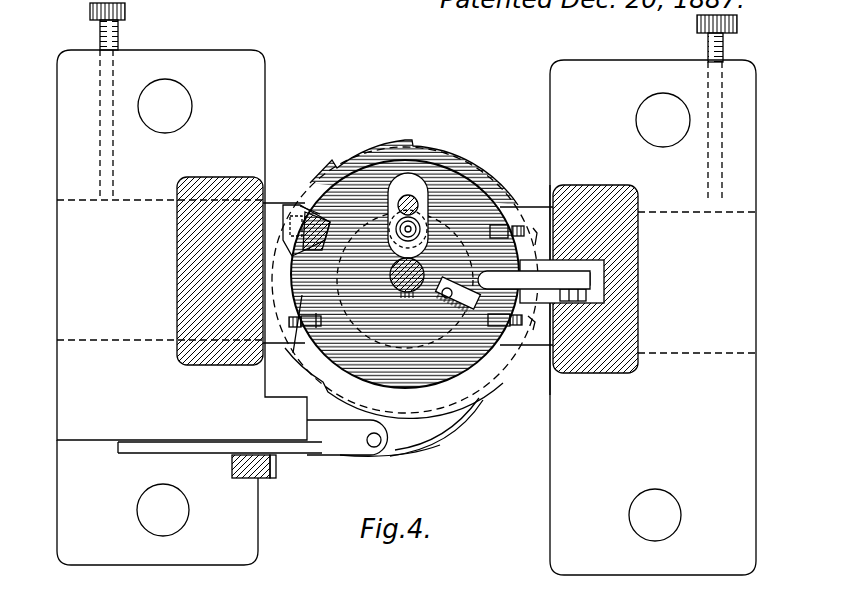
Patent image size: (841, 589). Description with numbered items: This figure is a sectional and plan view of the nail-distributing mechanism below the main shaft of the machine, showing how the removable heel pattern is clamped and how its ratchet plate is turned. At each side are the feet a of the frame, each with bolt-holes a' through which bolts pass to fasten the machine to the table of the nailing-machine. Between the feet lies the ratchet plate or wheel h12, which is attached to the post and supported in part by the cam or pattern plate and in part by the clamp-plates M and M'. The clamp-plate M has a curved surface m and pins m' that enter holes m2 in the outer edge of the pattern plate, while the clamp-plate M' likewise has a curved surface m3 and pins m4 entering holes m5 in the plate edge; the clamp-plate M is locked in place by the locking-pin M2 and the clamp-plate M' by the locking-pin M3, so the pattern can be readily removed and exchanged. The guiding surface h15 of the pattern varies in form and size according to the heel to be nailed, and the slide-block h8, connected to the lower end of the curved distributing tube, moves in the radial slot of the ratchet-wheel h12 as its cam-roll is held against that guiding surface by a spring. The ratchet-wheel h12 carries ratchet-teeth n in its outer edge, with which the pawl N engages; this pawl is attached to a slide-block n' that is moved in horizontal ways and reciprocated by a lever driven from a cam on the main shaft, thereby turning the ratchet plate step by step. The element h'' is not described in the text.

The feet a is at (406, 312).
The bolt-holes a' is at (399, 305).
The locking-pin M2 is at (120, 30).
The locking-pin M3 is at (725, 44).
The clamp-plate M is at (241, 266).
The clamp-plate M' is at (569, 273).
The curved surface m is at (306, 199).
The pins m' is at (290, 296).
The holes m2 is at (300, 243).
The curved surface m3 is at (600, 196).
The pins m4 is at (515, 326).
The holes m5 is at (495, 225).
The ratchet-teeth n is at (405, 268).
The slide-block n' is at (347, 437).
The pawl N is at (437, 428).
The hub h'' is at (405, 253).
The slide-block h8 is at (447, 200).
The ratchet-wheel h12 is at (480, 382).
The guiding surface h15 is at (386, 347).